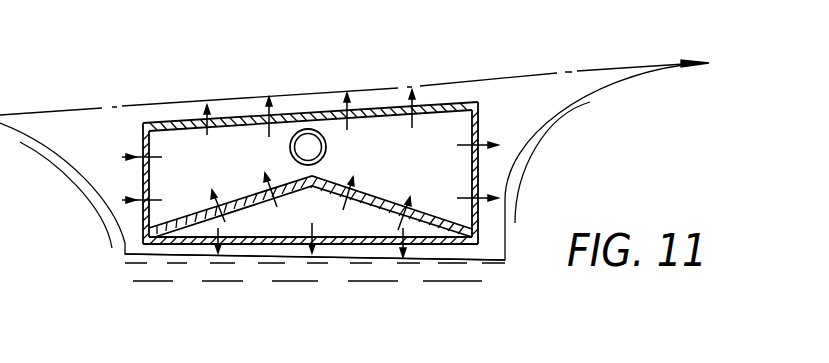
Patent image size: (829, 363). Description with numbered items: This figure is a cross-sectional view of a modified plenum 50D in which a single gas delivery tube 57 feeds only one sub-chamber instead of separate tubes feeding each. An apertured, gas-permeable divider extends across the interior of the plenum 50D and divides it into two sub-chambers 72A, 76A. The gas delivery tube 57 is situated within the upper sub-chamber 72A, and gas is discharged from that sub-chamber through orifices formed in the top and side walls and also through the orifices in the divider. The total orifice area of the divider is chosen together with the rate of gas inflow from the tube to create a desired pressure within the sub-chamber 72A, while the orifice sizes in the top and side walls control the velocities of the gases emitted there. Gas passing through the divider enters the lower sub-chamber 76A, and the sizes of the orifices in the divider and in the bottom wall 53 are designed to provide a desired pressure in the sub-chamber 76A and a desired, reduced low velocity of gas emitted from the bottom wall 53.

The plenum 50D is at (237, 105).
The sub-chamber 72A is at (450, 121).
The sub-chamber 76A is at (376, 237).
The bottom wall 53 is at (193, 238).
The gas delivery tube 57 is at (327, 148).